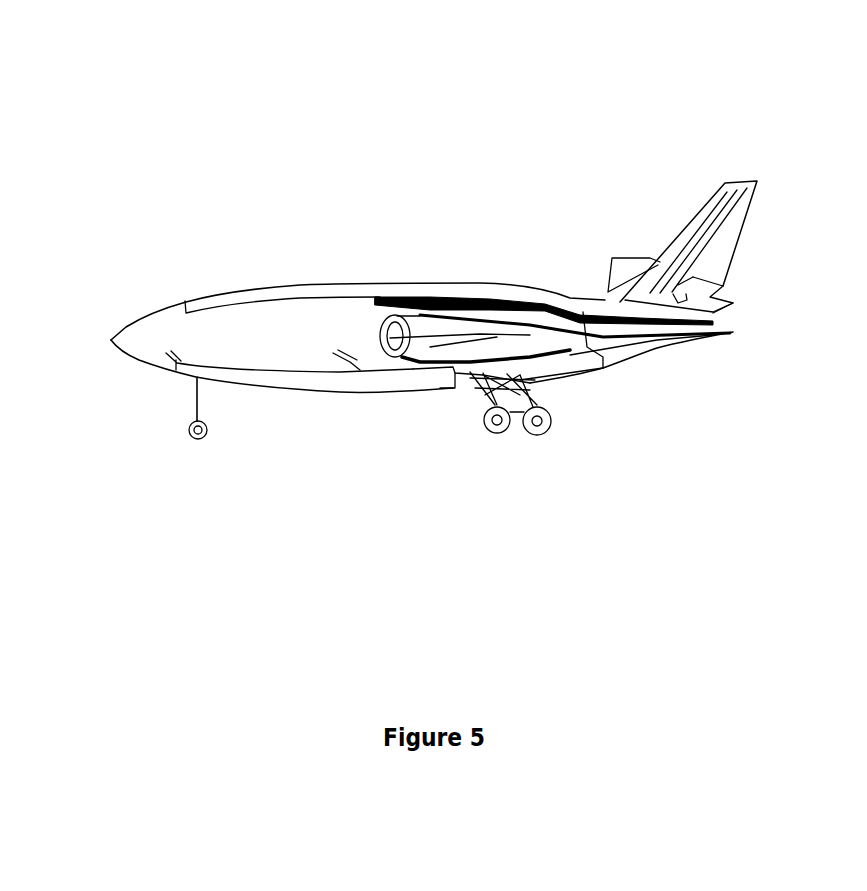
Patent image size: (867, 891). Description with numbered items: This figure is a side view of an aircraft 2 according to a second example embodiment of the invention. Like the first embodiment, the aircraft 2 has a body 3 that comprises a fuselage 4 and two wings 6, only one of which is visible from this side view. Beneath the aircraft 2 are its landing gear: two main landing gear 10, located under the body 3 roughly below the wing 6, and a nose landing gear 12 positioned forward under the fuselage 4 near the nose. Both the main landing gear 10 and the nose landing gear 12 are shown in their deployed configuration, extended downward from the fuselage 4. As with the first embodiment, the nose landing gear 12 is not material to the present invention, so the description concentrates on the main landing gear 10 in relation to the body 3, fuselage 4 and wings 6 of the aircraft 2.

The aircraft 2 is at (218, 117).
The body 3 is at (530, 240).
The fuselage 4 is at (408, 278).
The wing 6 is at (415, 330).
The main landing gear 10 is at (490, 462).
The nose landing gear 12 is at (168, 452).